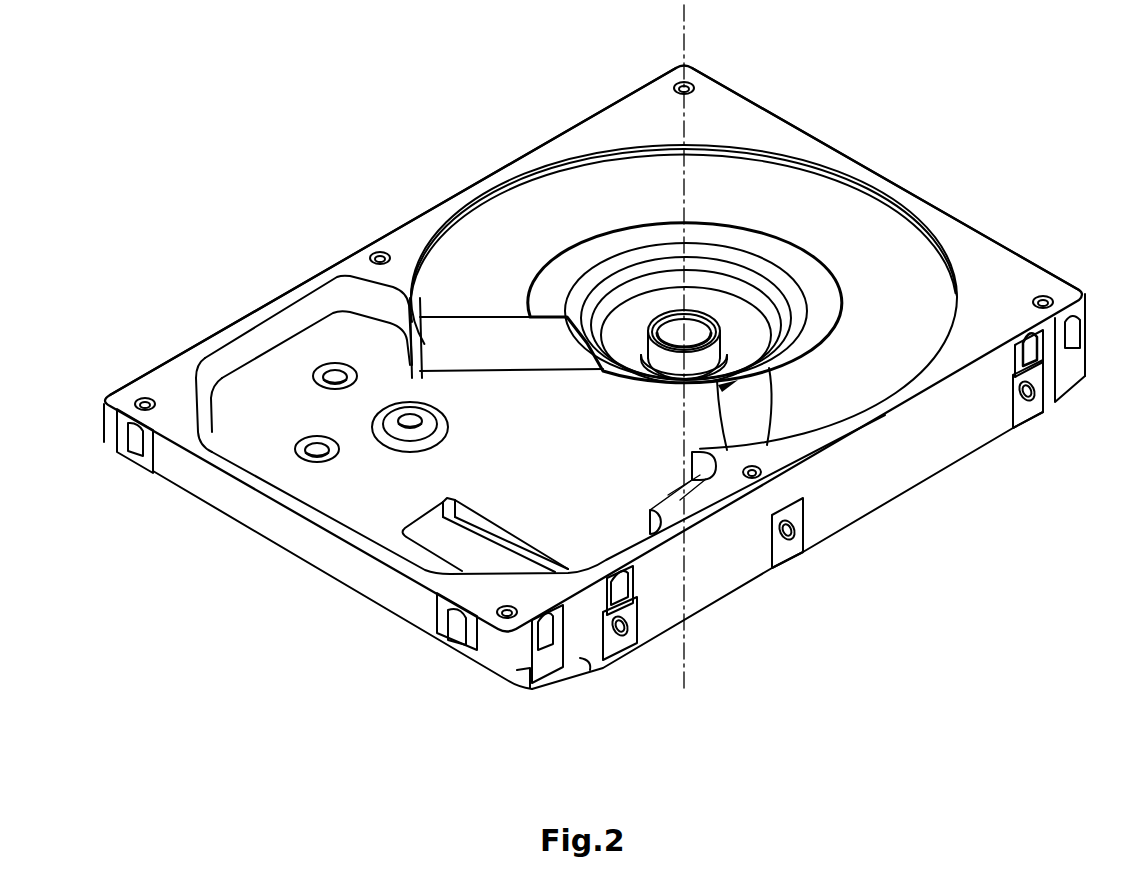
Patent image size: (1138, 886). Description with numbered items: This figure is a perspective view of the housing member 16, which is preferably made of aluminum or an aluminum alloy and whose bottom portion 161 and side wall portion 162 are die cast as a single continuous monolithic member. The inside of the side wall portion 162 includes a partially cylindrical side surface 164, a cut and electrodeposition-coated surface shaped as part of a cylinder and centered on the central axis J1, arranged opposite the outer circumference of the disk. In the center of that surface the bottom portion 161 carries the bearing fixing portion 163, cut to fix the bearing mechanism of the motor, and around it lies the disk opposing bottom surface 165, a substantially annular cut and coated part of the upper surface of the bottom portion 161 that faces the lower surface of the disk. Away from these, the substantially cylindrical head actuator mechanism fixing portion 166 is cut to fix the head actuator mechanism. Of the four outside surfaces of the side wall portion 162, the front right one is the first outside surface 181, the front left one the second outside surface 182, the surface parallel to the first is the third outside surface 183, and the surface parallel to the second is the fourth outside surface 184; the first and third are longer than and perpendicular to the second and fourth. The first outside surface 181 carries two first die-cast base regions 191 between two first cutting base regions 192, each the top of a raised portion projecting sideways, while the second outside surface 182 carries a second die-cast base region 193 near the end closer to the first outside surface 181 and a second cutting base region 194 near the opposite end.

The housing member 16 is at (383, 152).
The central axis J1 is at (705, 50).
The bottom portion 161 is at (275, 400).
The side wall portion 162 is at (290, 302).
The bearing fixing portion 163 is at (655, 325).
The partially cylindrical side surface 164 is at (840, 180).
The disk opposing bottom surface 165 is at (503, 240).
The head actuator mechanism fixing portion 166 is at (405, 410).
The first outside surface 181 is at (840, 498).
The second outside surface 182 is at (305, 536).
The third outside surface 183 is at (175, 345).
The fourth outside surface 184 is at (967, 222).
The first die-cast base region 191 is at (1032, 397).
The first cutting base region 192 is at (1076, 342).
The second die-cast base region 193 is at (458, 636).
The second cutting base region 194 is at (133, 452).